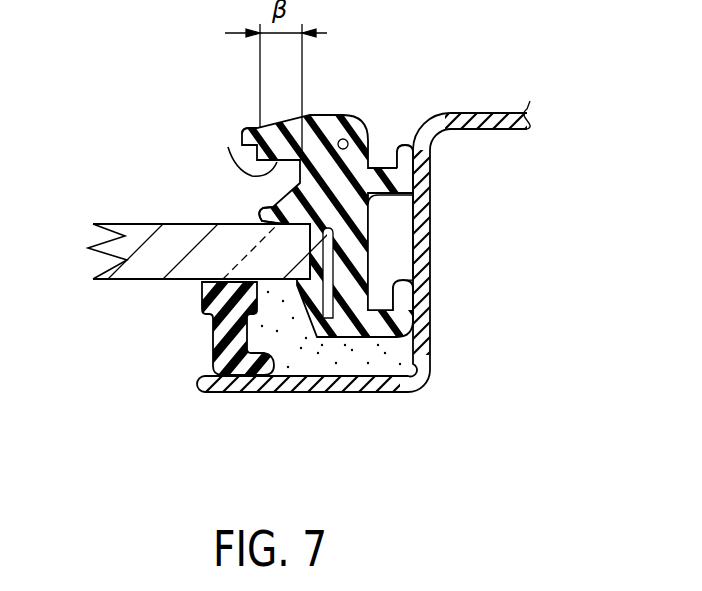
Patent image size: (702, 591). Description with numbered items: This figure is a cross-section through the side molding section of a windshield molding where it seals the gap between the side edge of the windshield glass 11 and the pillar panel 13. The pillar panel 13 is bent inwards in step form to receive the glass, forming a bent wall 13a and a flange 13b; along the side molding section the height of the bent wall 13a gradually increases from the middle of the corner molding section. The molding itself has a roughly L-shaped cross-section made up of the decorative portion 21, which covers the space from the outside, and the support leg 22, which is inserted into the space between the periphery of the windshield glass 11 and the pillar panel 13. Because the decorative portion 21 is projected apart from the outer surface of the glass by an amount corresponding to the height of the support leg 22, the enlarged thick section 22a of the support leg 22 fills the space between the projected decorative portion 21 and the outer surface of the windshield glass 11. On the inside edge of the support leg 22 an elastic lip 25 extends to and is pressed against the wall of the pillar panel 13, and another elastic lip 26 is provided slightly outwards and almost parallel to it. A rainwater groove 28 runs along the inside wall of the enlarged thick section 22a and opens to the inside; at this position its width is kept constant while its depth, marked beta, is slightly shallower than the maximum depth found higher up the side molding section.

The windshield glass 11 is at (150, 242).
The pillar panel 13 is at (495, 123).
The bent wall 13a is at (430, 210).
The flange 13b is at (300, 405).
The decorative portion 21 is at (323, 113).
The support leg 22 is at (357, 242).
The enlarged thick section 22a is at (253, 207).
The elastic lip 25 is at (413, 300).
The elastic lip 26 is at (403, 162).
The rainwater groove 28 is at (228, 147).